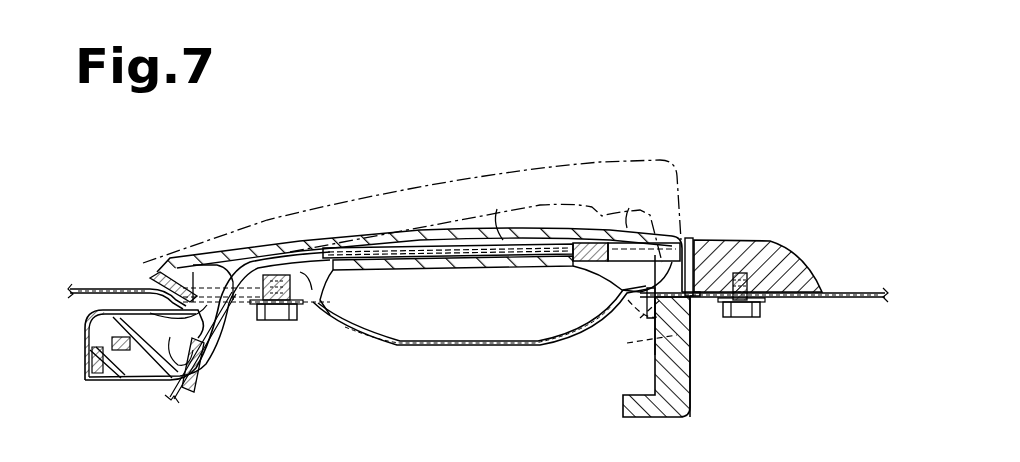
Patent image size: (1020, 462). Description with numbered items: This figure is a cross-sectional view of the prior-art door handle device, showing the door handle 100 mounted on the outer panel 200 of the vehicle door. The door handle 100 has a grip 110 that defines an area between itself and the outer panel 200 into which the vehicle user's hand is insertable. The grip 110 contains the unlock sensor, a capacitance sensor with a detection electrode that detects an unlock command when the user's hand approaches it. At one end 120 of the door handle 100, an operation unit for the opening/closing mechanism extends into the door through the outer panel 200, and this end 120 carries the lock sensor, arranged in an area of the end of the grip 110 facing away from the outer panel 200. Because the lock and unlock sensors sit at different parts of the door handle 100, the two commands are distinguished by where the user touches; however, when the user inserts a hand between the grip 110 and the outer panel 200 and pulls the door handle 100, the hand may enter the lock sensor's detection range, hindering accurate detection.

The door handle 100 is at (550, 197).
The grip 110 is at (482, 272).
The end of the door handle 120 is at (671, 236).
The outer panel 200 is at (100, 286).